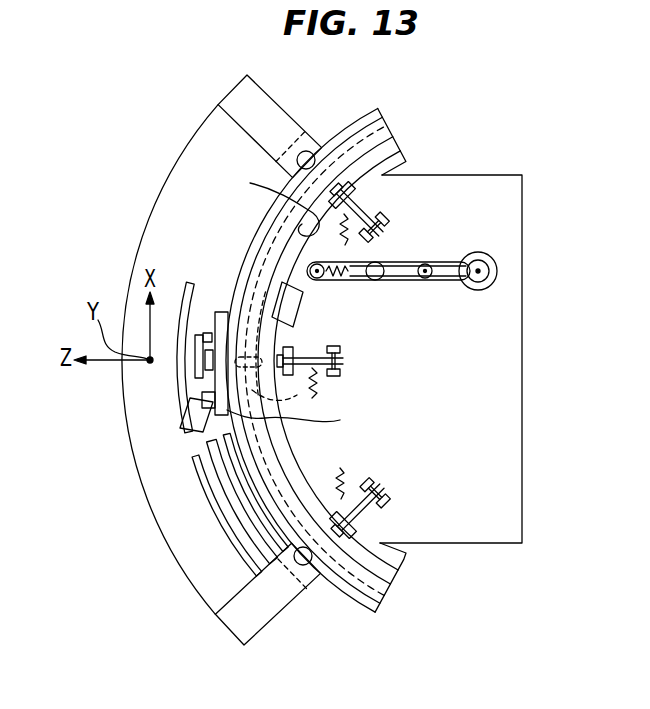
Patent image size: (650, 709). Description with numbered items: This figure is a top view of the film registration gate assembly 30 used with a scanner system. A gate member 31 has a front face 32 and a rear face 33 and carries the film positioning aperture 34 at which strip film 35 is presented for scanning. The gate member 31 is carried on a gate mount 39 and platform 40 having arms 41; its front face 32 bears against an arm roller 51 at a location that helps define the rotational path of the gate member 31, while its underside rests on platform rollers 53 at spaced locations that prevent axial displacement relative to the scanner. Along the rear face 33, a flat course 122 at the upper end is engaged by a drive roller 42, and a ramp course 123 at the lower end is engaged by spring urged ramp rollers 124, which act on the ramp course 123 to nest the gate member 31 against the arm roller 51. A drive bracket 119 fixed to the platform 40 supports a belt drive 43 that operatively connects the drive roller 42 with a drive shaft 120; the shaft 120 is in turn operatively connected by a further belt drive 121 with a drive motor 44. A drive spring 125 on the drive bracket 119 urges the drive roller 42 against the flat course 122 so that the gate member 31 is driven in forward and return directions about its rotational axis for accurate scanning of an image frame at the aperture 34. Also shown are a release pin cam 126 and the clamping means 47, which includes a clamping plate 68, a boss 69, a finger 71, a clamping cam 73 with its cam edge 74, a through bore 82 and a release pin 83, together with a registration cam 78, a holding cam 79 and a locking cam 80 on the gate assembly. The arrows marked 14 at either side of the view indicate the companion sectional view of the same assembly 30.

The film registration gate assembly 30 is at (130, 173).
The platform 40 is at (135, 496).
The gate mount 39 is at (487, 545).
The arms 41 is at (237, 98).
The arm roller 51 is at (307, 150).
The front face 32 is at (340, 135).
The gate member 31 is at (383, 121).
The strip film 35 is at (357, 118).
The rear face 33 is at (402, 148).
The ramp course 123 is at (408, 153).
The platform rollers 53 is at (398, 164).
The ramp rollers 124 is at (360, 187).
The belt drive 43 is at (410, 281).
The drive roller 42 is at (320, 268).
The drive spring 125 is at (340, 262).
The drive bracket 119 is at (383, 281).
The drive shaft 120 is at (432, 281).
The belt drive 121 is at (480, 290).
The drive motor 44 is at (478, 253).
The release pin cam 126 is at (302, 302).
The flat course 122 is at (270, 196).
The through bore 82 is at (240, 288).
The aperture 34 is at (288, 393).
The clamping means 47 is at (227, 410).
The cam edge 74 is at (298, 417).
The finger 71 is at (203, 337).
The boss 69 is at (206, 365).
The release pin 83 is at (202, 394).
The clamping plate 68 is at (188, 425).
The clamping cam 73 is at (190, 306).
The registration cam 78 is at (194, 480).
The locking cam 80 is at (220, 488).
The holding cam 79 is at (245, 460).
The section line 14- 14 is at (47, 383).